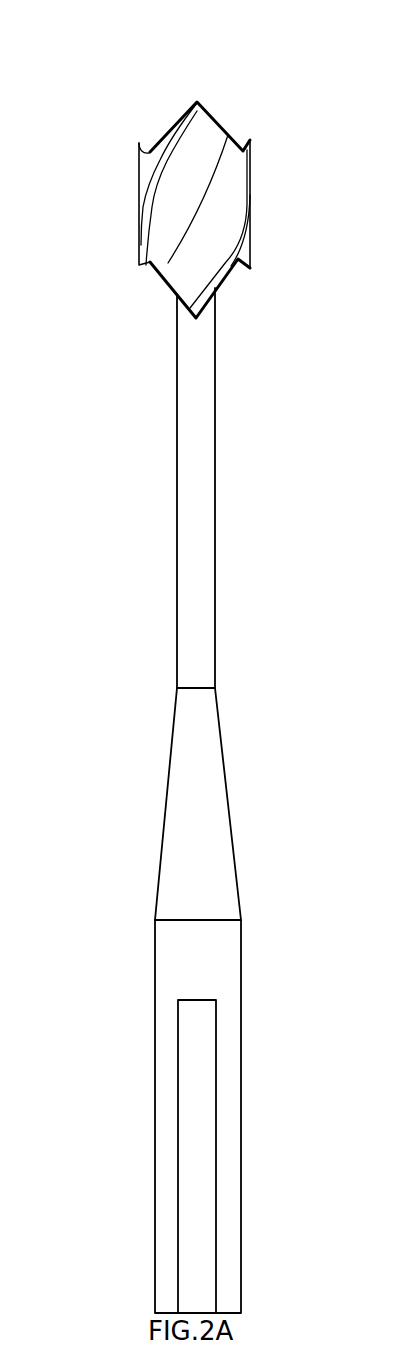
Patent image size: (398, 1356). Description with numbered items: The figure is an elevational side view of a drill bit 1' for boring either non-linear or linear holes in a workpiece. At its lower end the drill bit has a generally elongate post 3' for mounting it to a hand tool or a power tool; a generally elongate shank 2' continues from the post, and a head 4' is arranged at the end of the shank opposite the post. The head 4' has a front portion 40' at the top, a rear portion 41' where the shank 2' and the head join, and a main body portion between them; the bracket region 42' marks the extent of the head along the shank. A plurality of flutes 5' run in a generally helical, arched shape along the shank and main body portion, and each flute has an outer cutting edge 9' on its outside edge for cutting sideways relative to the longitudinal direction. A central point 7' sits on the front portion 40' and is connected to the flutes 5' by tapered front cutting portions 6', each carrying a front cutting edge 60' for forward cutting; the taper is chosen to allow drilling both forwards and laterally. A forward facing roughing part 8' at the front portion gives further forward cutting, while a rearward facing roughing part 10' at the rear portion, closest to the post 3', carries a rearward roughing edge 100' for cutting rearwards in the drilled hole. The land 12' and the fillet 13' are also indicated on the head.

The drill bit 1' is at (306, 593).
The shank 2' is at (224, 604).
The post 3' is at (239, 1116).
The head 4' is at (240, 210).
The flutes 5' is at (271, 194).
The front cutting portions 6' is at (262, 88).
The central point 7' is at (229, 84).
The forward facing roughing part 8' is at (217, 105).
The outer cutting edge 9' is at (243, 326).
The rearward facing roughing part 10' is at (190, 301).
The land 12' is at (278, 160).
The chisel edge 13' is at (307, 121).
The front portion 40' is at (223, 57).
The rear portion 41' is at (126, 358).
The head region 42' is at (56, 212).
The front cutting edge 60' is at (268, 112).
The rearward roughing edge 100' is at (89, 319).